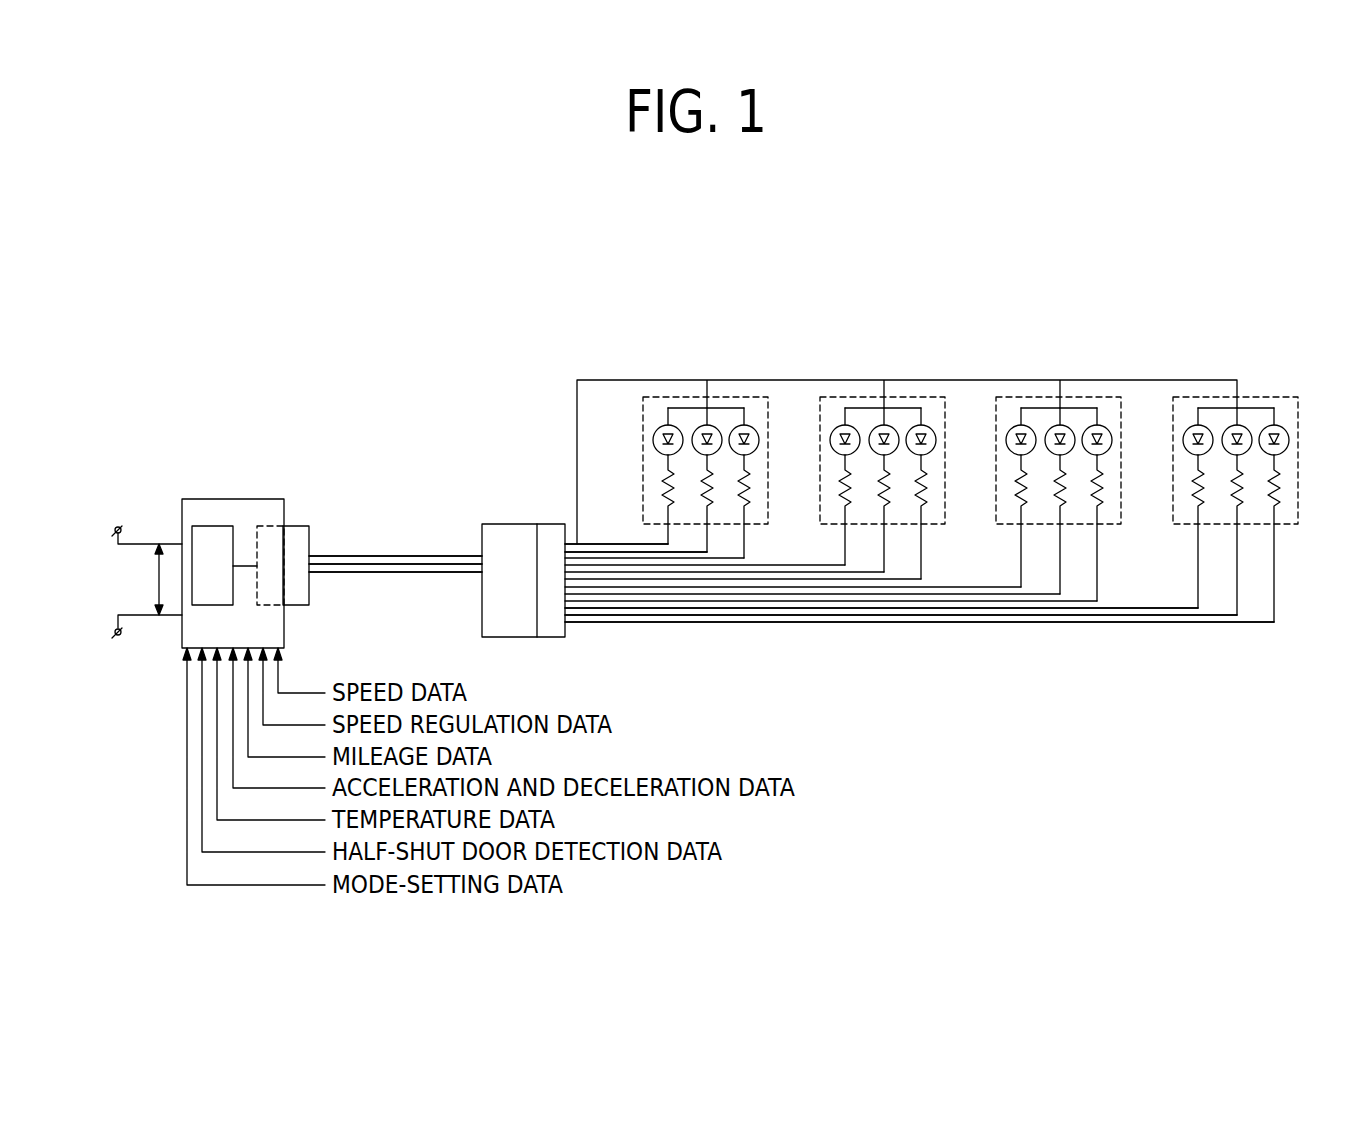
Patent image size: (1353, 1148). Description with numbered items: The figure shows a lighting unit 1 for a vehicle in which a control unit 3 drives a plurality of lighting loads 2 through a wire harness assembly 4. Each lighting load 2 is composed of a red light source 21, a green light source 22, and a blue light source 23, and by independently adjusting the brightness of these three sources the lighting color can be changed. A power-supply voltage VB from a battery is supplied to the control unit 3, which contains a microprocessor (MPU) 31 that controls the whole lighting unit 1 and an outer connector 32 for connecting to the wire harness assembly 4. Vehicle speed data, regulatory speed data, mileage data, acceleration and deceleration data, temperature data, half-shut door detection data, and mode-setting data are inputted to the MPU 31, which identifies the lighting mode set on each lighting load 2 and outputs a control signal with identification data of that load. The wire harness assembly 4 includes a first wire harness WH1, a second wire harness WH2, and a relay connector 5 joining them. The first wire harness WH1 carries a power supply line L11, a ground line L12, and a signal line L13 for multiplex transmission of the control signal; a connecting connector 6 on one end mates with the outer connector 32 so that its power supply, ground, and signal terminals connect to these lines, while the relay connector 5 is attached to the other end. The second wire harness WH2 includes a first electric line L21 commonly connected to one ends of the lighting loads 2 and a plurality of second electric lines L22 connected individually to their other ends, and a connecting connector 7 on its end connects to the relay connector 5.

The lighting unit 1 is at (1218, 268).
The lighting load 2 is at (756, 396).
The control unit 3 is at (238, 499).
The wire harness assembly 4 is at (785, 628).
The relay connector 5 is at (508, 637).
The connecting connector 6 is at (298, 526).
The connecting connector 7 is at (550, 637).
The red light source 21 is at (661, 427).
The green light source 22 is at (699, 428).
The blue light source 23 is at (736, 427).
The microprocessor (MPU) 31 is at (213, 524).
The outer connector 32 is at (263, 524).
The power supply line L11 is at (372, 556).
The ground line L12 is at (387, 564).
The signal line L13 is at (400, 572).
The first electric line L21 is at (577, 544).
The second electric line L22 is at (608, 538).
The first wire harness WH1 is at (465, 395).
The second wire harness WH2 is at (688, 665).
The power-supply voltage VB is at (157, 578).